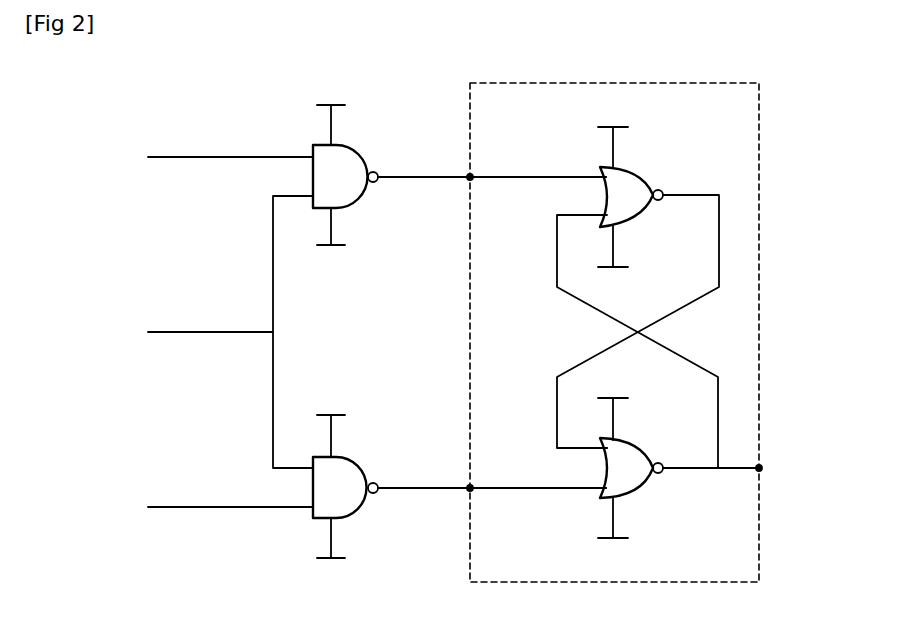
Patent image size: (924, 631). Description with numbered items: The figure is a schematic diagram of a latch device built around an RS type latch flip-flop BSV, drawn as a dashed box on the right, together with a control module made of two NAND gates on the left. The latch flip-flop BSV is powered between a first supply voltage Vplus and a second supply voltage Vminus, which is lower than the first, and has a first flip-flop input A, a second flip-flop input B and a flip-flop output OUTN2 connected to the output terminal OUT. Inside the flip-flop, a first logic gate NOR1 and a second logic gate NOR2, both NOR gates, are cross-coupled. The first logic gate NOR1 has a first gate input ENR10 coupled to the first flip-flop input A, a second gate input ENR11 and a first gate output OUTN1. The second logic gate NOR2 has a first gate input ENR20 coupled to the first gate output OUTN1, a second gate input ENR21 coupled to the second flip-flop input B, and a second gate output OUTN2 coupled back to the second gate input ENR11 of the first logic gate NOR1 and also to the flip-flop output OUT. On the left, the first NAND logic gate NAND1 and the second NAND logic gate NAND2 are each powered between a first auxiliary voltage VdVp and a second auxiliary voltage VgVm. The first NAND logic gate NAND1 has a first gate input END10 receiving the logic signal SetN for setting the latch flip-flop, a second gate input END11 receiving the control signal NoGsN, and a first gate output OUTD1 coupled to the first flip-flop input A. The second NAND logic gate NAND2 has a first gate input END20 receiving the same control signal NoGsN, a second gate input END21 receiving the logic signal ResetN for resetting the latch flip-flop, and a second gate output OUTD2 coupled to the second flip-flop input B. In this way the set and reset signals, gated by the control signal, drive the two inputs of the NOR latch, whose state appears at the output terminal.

The RS type latch flip-flop BSV is at (776, 94).
The first NAND logic gate NAND1 is at (348, 183).
The second NAND logic gate NAND2 is at (348, 494).
The first logic gate NOR1 is at (633, 203).
The second logic gate NOR2 is at (632, 473).
The first gate input END10 is at (308, 154).
The second gate input END11 is at (308, 193).
The first gate input END20 is at (308, 474).
The second gate input END21 is at (308, 514).
The first gate output OUTD1 is at (379, 171).
The second gate output OUTD2 is at (379, 482).
The first gate input ENR10 is at (601, 169).
The second gate input ENR11 is at (603, 209).
The first gate input ENR20 is at (603, 455).
The second gate input ENR21 is at (602, 498).
The first gate output OUTN1 is at (665, 188).
The second gate output OUTN2 is at (665, 460).
The output terminal OUT is at (762, 466).
The first flip-flop input A is at (528, 166).
The second flip-flop input B is at (528, 476).
The logic signal for setting the latch flip-flop SetN is at (204, 157).
The logic signal for resetting the latch flip-flop ResetN is at (191, 509).
The control signal NoGsN is at (191, 332).
The first auxiliary voltage VdVp is at (332, 265).
The second auxiliary voltage VgVm is at (336, 395).
The first supply voltage Vplus is at (615, 266).
The second supply voltage Vminus is at (616, 398).